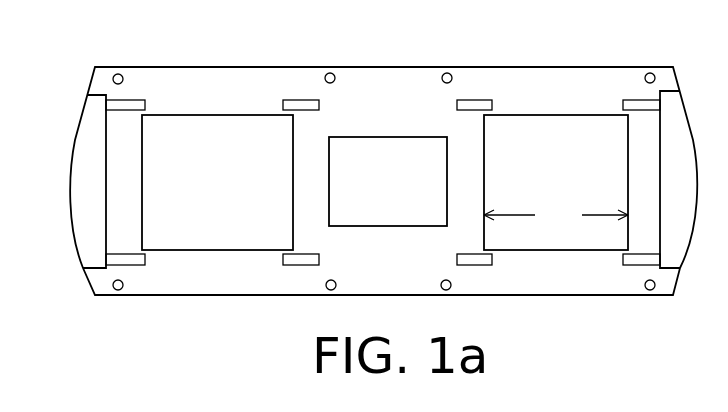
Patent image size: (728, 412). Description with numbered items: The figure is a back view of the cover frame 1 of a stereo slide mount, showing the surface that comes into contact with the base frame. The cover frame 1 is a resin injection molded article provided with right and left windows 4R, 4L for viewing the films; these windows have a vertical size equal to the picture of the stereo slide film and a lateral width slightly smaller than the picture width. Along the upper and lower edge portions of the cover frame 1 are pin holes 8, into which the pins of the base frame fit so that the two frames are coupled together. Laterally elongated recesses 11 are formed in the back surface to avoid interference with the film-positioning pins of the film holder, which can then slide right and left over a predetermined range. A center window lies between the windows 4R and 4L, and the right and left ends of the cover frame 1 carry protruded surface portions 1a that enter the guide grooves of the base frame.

The cover frame 1 is at (272, 63).
The protruded surface portion 1a is at (80, 121).
The left window 4L is at (225, 116).
The right window 4R is at (550, 116).
The pin hole 8 is at (117, 74).
The laterally elongated recess 11 is at (133, 100).